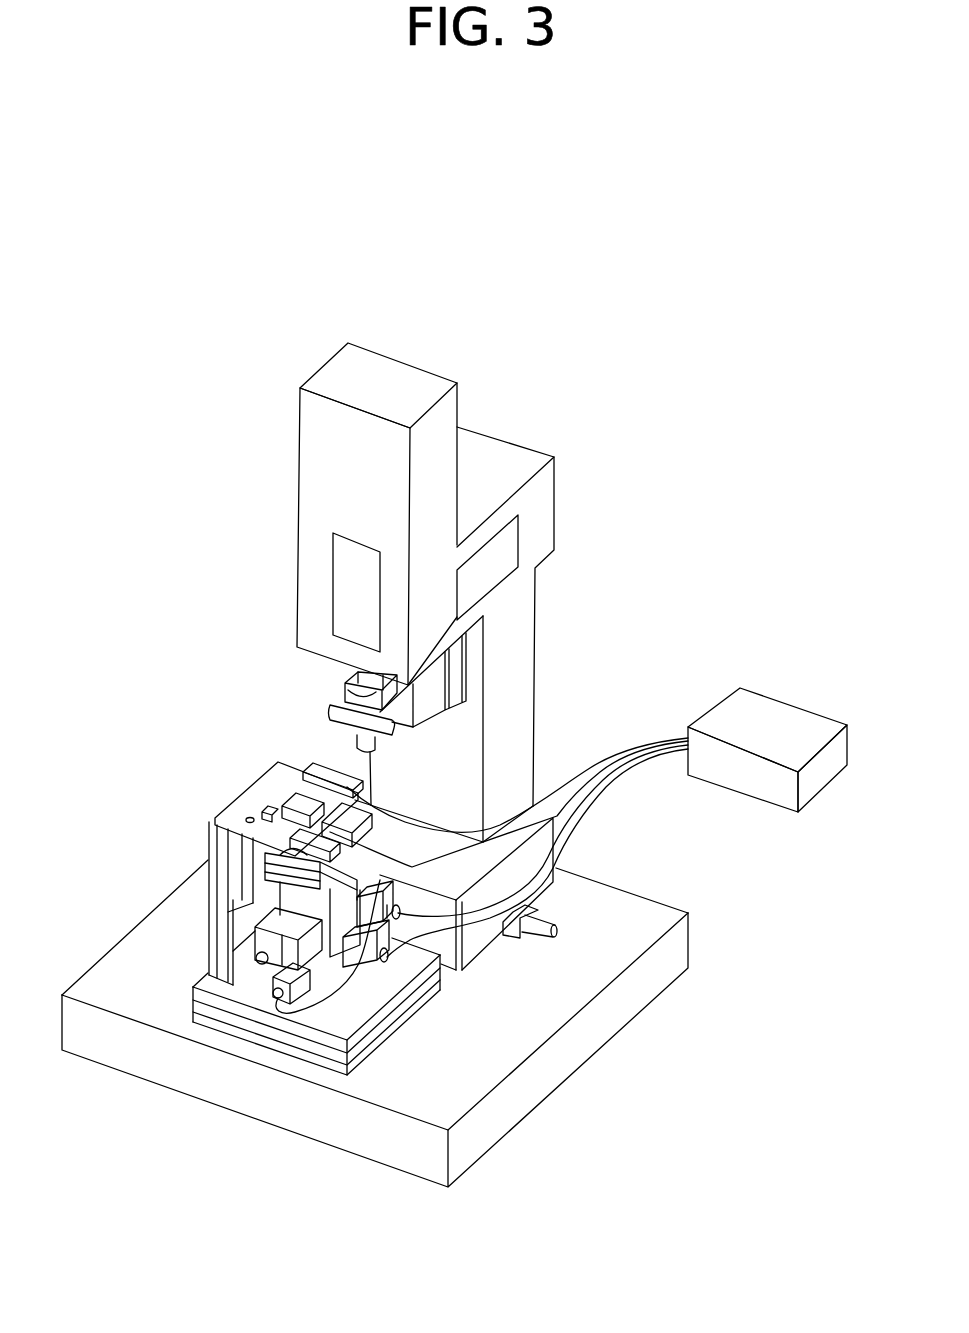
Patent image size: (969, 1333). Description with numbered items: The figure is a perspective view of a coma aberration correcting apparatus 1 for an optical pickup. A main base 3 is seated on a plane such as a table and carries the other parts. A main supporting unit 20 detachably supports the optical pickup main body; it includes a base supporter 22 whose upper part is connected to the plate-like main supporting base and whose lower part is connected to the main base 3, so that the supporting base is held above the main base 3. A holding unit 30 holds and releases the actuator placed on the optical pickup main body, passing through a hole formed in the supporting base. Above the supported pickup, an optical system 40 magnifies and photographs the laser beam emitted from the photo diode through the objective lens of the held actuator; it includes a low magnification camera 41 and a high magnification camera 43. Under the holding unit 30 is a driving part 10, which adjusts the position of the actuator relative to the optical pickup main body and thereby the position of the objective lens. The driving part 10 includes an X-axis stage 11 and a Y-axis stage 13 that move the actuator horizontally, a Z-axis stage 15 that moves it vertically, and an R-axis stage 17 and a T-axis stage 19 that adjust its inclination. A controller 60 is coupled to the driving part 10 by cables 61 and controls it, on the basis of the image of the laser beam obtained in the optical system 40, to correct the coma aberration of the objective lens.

The coma aberration correcting apparatus 1 is at (296, 354).
The main base 3 is at (545, 1045).
The driving part 10 is at (387, 1237).
The X-axis stage 11 is at (398, 915).
The Y-axis stage 13 is at (279, 998).
The Z-axis stage 15 is at (260, 960).
The R-axis stage 17 is at (328, 992).
The T-axis stage 19 is at (388, 958).
The main supporting unit 20 is at (243, 779).
The base supporter 22 is at (209, 842).
The holding unit 30 is at (259, 871).
The optical system 40 is at (300, 464).
The low magnification camera 41 is at (345, 585).
The high magnification camera 43 is at (503, 568).
The controller 60 is at (742, 688).
The cables 61 is at (620, 745).